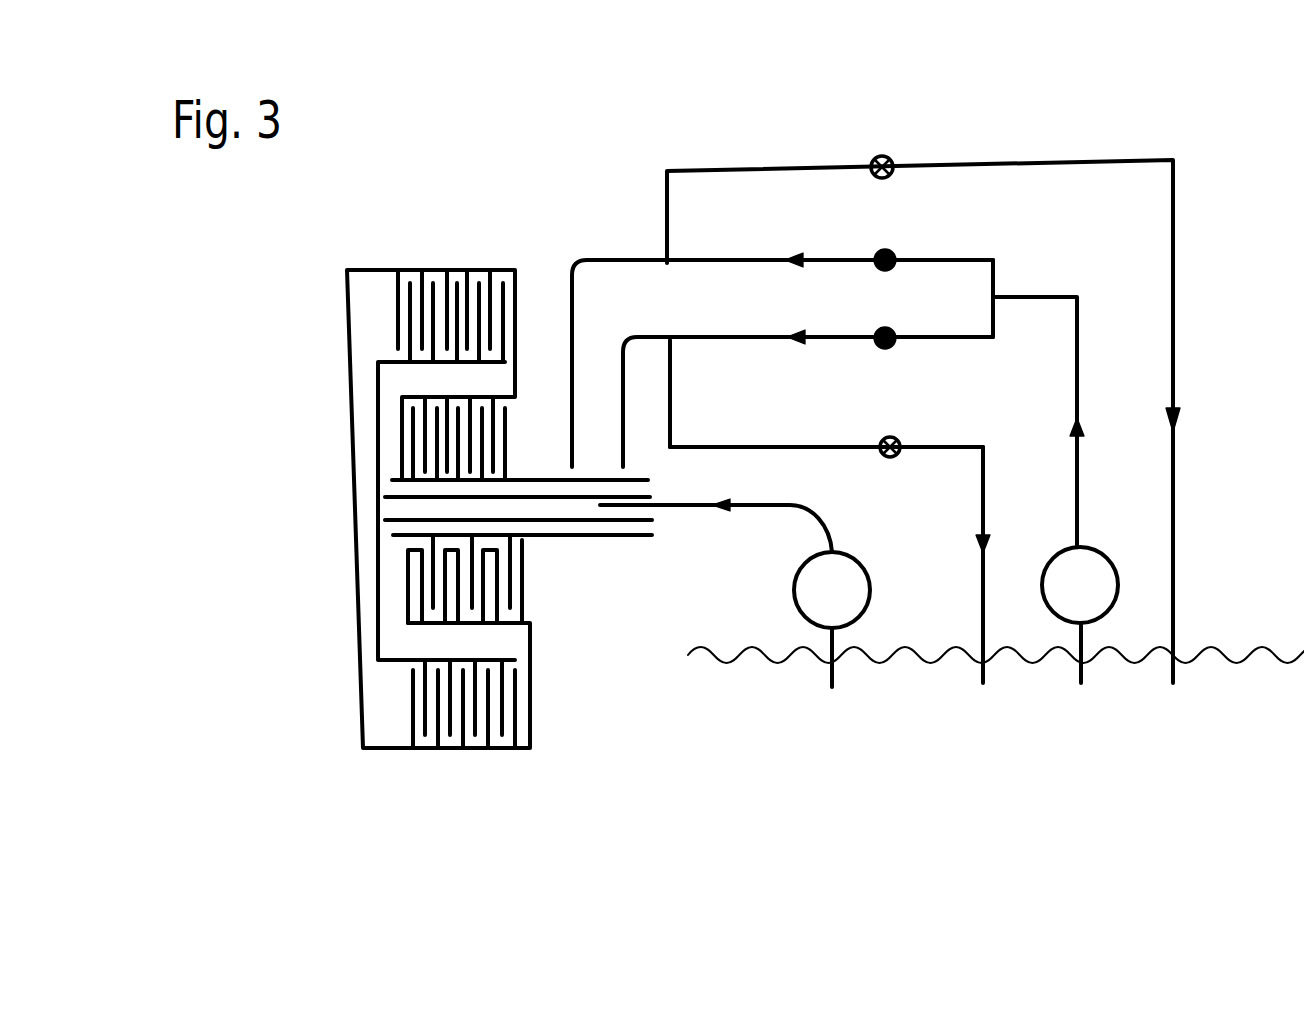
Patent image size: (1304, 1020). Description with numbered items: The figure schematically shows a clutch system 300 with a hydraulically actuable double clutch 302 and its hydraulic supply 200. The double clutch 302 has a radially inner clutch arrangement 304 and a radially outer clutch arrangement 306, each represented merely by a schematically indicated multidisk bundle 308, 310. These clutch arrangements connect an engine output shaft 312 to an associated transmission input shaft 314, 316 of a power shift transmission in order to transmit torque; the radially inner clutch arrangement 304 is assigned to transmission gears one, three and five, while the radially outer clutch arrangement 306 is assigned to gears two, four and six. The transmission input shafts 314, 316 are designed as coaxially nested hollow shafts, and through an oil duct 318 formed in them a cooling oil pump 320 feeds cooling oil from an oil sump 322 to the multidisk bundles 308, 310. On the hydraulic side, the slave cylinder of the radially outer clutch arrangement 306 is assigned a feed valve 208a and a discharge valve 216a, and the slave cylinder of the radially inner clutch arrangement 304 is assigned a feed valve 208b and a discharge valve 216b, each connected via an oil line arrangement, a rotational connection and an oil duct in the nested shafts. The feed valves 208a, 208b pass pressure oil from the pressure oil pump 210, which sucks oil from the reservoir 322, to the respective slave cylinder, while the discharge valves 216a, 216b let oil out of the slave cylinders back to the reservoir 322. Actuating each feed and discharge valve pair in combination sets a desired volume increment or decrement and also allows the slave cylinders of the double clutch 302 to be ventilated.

The hydraulic actuation system 200 is at (1220, 203).
The feed valve 208a is at (890, 256).
The feed valve 208b is at (878, 345).
The pressure oil pump 210 is at (1053, 612).
The discharge valve 216a is at (887, 157).
The discharge valve 216b is at (887, 457).
The clutch system 300 is at (270, 249).
The double clutch 302 is at (369, 270).
The radially inner clutch arrangement 304 is at (413, 593).
The radially outer clutch arrangement 306 is at (417, 753).
The multidisk bundle 308 is at (403, 572).
The multidisk bundle 310 is at (490, 750).
The engine output shaft 312 is at (355, 515).
The transmission input shaft 314 is at (549, 497).
The transmission input shaft 316 is at (565, 478).
The oil duct 318 is at (420, 510).
The cooling oil pump 320 is at (810, 603).
The oil sump 322 is at (887, 650).